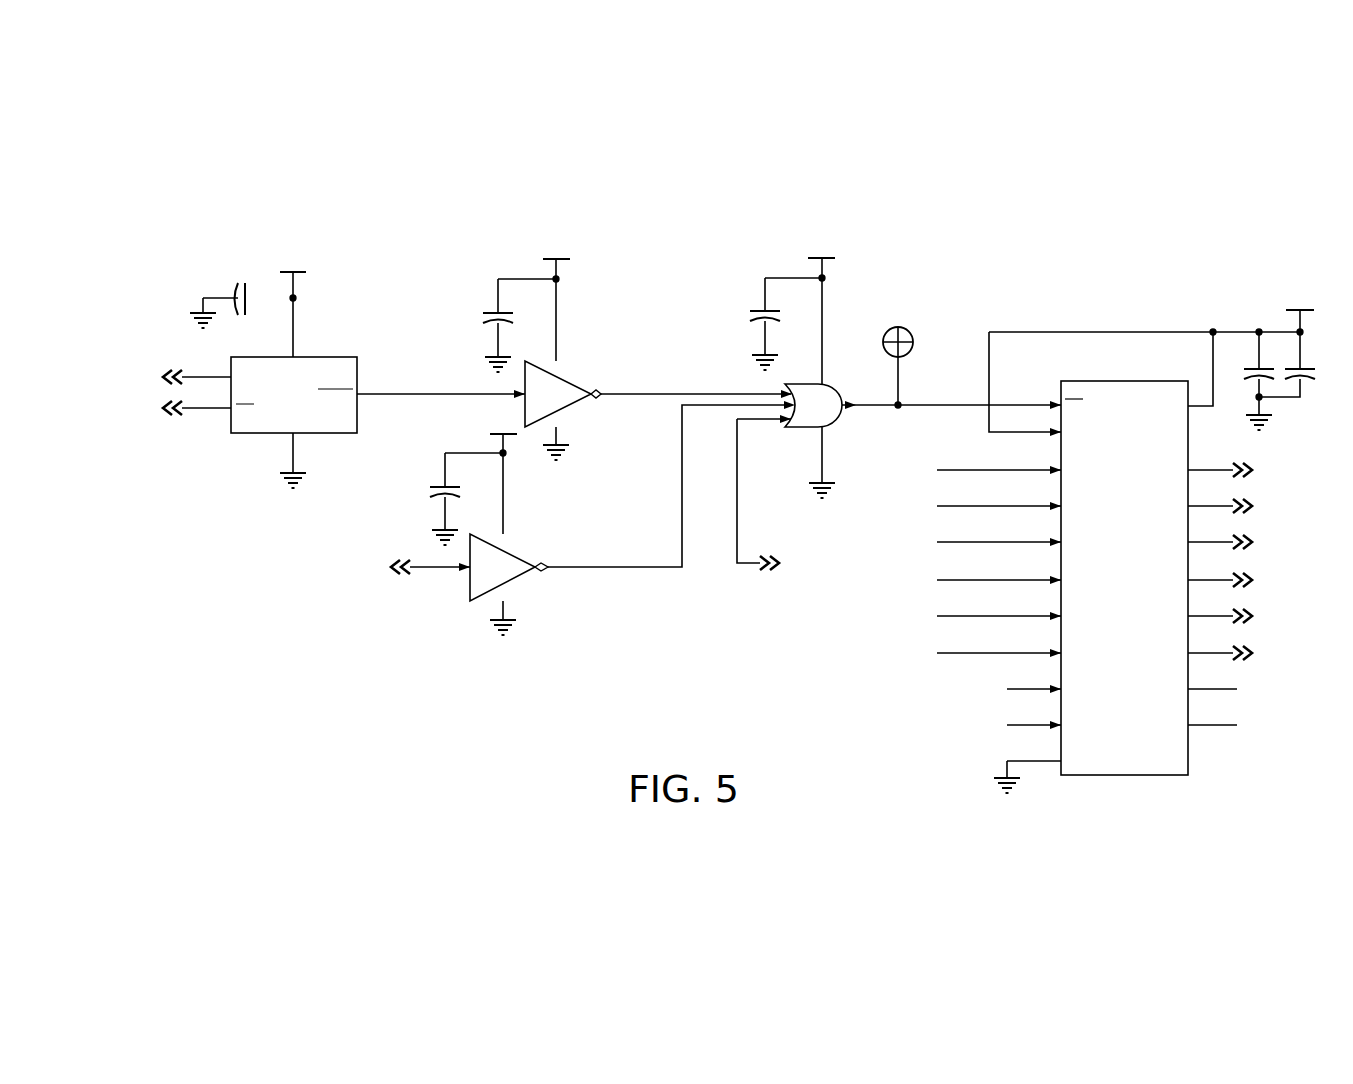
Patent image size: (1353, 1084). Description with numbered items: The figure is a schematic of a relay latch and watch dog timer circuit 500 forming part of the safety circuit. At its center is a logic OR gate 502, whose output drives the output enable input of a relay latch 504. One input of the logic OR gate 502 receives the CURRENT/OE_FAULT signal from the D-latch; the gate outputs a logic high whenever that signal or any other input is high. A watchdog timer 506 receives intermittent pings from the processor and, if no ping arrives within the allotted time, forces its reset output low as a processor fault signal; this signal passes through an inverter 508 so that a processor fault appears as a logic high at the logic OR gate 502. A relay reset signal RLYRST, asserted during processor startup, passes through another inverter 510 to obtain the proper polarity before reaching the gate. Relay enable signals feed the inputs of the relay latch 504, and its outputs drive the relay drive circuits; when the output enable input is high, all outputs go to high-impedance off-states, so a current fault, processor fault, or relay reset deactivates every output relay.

The relay latch and watch dog timer circuit 500 is at (605, 658).
The logic OR gate 502 is at (833, 383).
The relay latch 504 is at (1125, 775).
The watchdog timer 506 is at (247, 433).
The inverter 508 is at (565, 408).
The inverter 510 is at (512, 585).